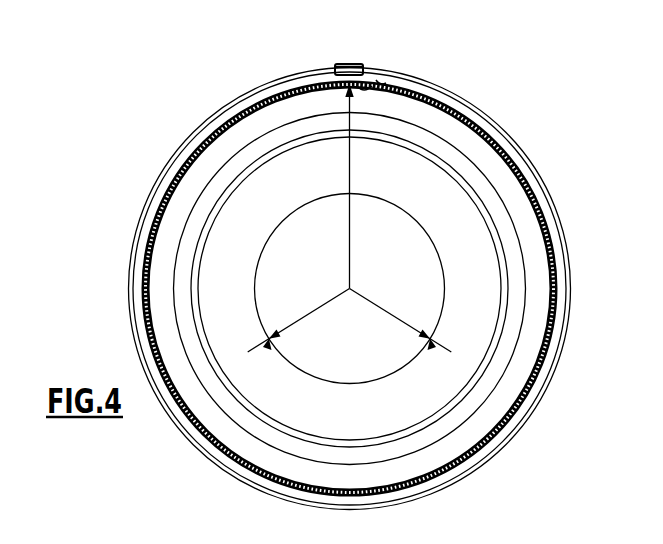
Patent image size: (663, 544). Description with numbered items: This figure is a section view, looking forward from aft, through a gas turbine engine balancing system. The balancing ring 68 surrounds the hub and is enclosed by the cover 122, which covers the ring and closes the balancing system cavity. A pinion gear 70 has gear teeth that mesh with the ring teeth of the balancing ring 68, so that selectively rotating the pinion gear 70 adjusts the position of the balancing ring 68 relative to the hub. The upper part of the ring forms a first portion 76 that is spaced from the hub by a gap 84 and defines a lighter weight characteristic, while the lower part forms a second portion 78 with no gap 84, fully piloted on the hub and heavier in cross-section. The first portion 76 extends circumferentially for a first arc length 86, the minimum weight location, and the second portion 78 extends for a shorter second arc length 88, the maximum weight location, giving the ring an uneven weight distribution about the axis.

The cover 122 is at (264, 90).
The balancing ring 68 is at (473, 123).
The pinion gear 70 is at (350, 63).
The first portion 76 is at (358, 88).
The second portion 78 is at (350, 492).
The gap 84 is at (380, 82).
The first arc length 86 is at (445, 290).
The second arc length 88 is at (298, 367).